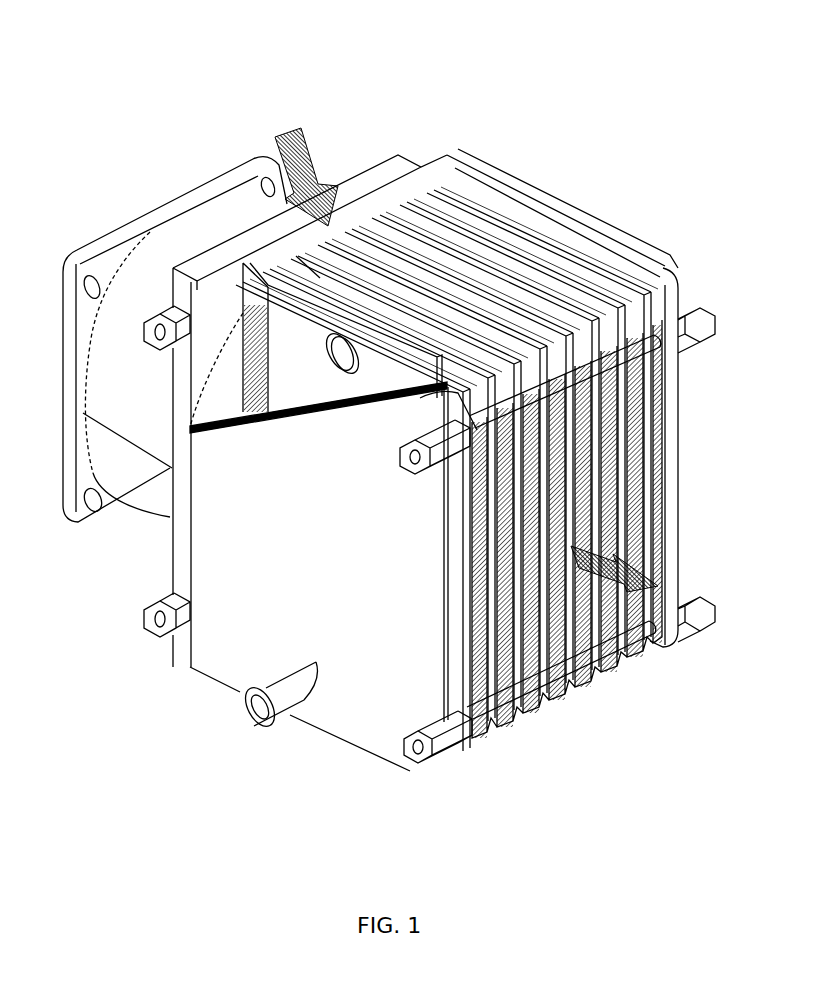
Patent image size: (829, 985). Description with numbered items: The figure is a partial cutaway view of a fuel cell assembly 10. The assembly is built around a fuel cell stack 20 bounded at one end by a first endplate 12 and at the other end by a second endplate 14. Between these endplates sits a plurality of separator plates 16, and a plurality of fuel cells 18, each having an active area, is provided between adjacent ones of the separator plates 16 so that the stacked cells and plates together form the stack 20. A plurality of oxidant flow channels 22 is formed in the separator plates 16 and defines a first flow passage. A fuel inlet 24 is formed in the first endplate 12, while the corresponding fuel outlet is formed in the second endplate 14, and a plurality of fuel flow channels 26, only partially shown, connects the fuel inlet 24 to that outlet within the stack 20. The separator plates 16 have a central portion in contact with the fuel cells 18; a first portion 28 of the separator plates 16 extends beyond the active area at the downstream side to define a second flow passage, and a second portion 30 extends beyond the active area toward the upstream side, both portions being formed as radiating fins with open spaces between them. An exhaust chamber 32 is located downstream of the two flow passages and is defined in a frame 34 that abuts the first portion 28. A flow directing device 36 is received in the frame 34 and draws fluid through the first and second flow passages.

The fuel cell assembly 10 is at (141, 131).
The first endplate 12 is at (293, 580).
The second endplate 14 is at (680, 443).
The separator plates 16 is at (547, 347).
The fuel cells 18 is at (330, 213).
The fuel cell stack 20 is at (636, 753).
The oxidant flow channels 22 is at (620, 670).
The fuel inlet 24 is at (278, 684).
The fuel flow channels 26 is at (330, 355).
The first portion of the separator plates 28 is at (365, 197).
The second portion of the separator plates 30 is at (575, 225).
The exhaust chamber 32 is at (217, 413).
The frame 34 is at (152, 233).
The flow directing device 36 is at (104, 338).